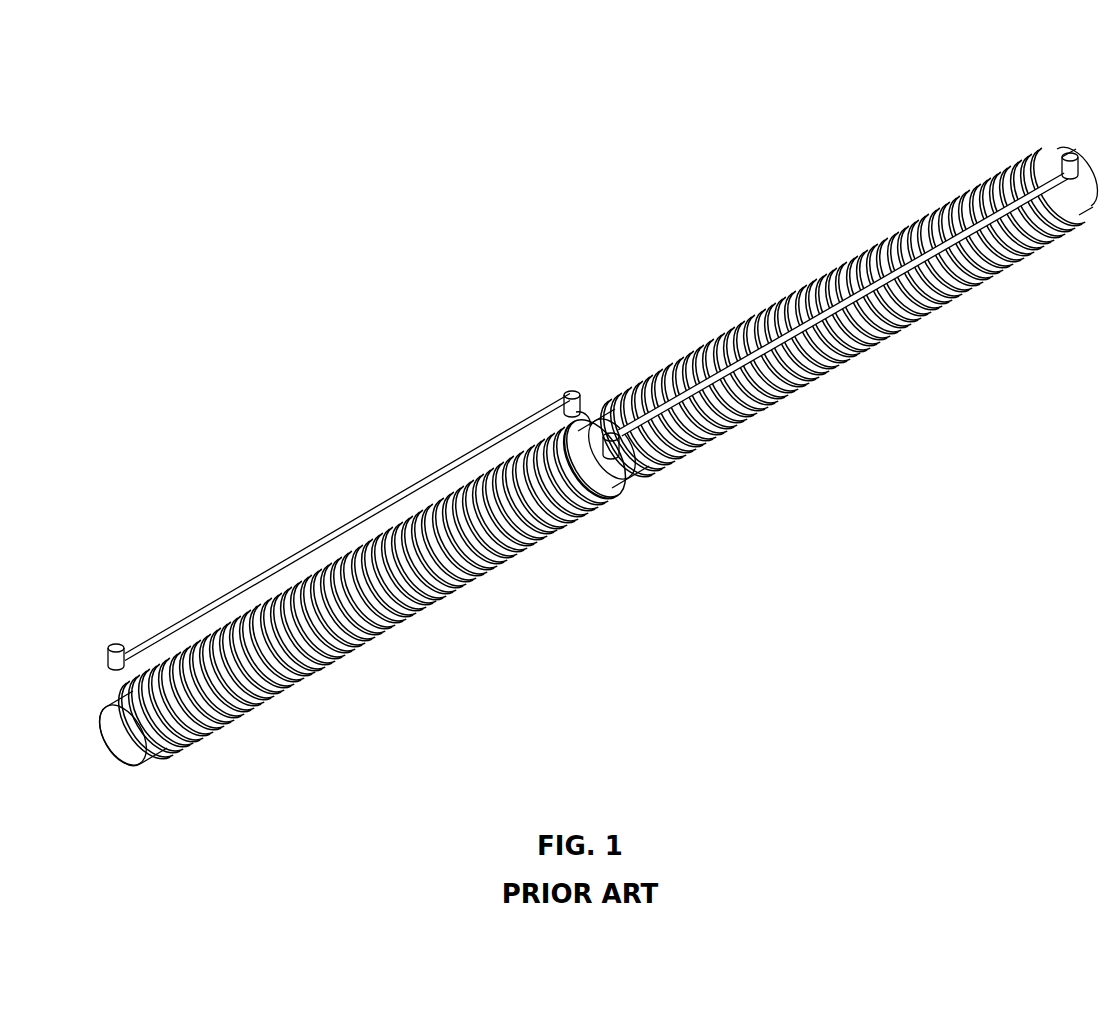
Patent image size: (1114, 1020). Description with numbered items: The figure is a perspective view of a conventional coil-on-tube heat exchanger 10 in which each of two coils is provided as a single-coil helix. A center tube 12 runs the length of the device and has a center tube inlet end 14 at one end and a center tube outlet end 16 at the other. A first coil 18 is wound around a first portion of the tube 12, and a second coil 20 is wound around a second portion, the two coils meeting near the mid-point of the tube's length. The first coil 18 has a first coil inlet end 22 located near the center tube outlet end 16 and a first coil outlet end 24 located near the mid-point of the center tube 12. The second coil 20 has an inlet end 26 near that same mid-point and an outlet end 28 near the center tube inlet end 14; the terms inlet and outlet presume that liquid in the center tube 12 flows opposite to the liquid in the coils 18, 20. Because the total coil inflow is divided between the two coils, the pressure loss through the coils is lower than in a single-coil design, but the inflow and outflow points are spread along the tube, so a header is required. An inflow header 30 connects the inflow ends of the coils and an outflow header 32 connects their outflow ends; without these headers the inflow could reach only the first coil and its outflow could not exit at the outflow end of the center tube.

The heat exchanger 10 is at (440, 320).
The center tube 12 is at (112, 760).
The center tube inlet end 14 is at (175, 782).
The center tube outlet end 16 is at (1077, 250).
The first coil 18 is at (817, 380).
The second coil 20 is at (437, 602).
The first coil inlet end 22 is at (1058, 104).
The first coil outlet end 24 is at (565, 398).
The inlet end 26 is at (623, 487).
The outlet end 28 is at (121, 605).
The inflow header 30 is at (725, 325).
The outflow header 32 is at (367, 502).